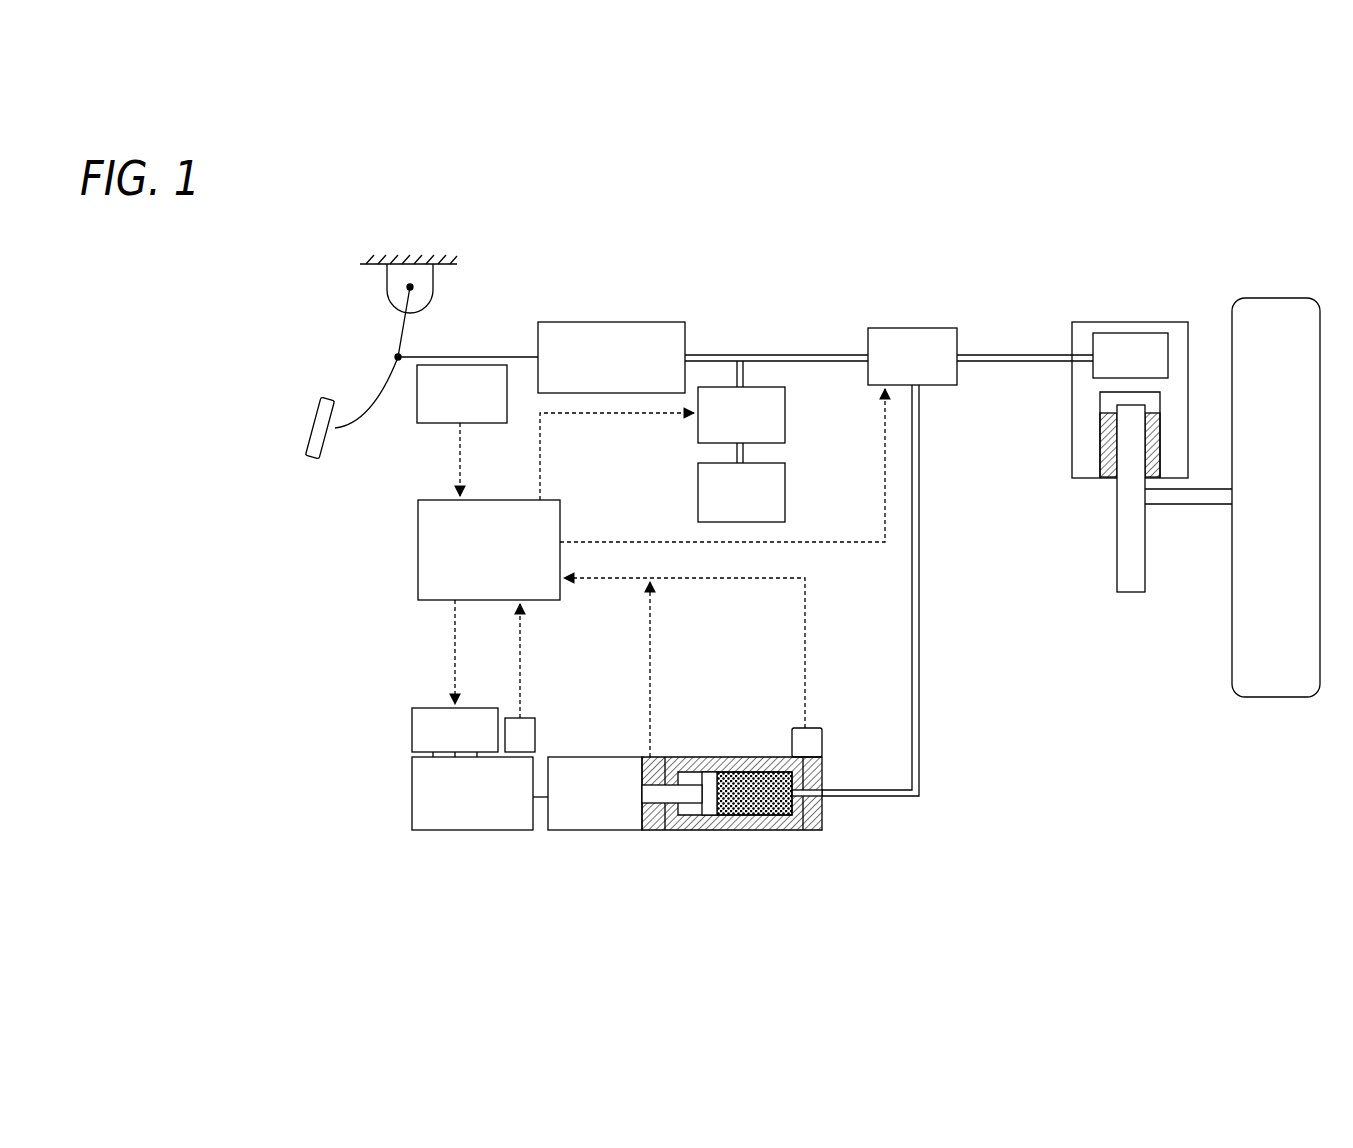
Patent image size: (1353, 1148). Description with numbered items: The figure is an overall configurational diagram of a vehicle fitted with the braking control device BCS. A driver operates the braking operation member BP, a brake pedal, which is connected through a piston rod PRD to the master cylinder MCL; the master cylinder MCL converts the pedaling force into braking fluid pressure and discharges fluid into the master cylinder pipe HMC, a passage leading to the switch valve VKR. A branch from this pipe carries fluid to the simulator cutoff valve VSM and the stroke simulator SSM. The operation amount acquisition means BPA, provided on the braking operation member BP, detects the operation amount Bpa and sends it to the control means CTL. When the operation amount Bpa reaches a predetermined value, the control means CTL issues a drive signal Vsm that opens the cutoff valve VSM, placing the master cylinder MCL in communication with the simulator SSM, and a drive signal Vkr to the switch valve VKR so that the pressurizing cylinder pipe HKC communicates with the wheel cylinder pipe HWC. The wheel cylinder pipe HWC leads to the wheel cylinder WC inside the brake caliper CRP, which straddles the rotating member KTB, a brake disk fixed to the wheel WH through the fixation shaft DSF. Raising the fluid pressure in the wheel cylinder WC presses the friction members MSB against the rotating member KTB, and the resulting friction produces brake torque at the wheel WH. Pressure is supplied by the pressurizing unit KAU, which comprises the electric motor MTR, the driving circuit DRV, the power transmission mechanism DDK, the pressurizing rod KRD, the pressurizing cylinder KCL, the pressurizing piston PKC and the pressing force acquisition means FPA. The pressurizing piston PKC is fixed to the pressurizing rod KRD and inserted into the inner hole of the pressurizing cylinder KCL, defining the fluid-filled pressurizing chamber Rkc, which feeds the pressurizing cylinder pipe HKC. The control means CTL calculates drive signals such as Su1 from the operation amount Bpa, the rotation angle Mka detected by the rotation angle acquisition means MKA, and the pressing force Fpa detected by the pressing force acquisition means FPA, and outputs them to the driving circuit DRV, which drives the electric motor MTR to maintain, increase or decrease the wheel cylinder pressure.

The braking operation member BP is at (314, 420).
The piston rod PRD is at (486, 355).
The master cylinder MCL is at (611, 357).
The operation amount acquisition means BPA is at (462, 394).
The operation amount Bpa is at (422, 459).
The master cylinder pipe HMC is at (780, 355).
The simulator cutoff valve VSM is at (741, 415).
The stroke simulator SSM is at (741, 482).
The drive signal Vsm is at (617, 456).
The switch valve VKR is at (912, 356).
The drive signal Vkr is at (722, 465).
The wheel cylinder pipe HWC is at (1010, 355).
The brake caliper CRP is at (1102, 322).
The wheel cylinder WC is at (1130, 355).
The friction members MSB is at (1102, 447).
The rotating member KTB is at (1131, 594).
The fixation shaft DSF is at (1188, 507).
The wheel WH is at (1276, 497).
The pressurizing cylinder pipe HKC is at (921, 584).
The control means CTL is at (489, 550).
The drive signal Su1 is at (320, 652).
The rotation angle Mka is at (557, 661).
The driving circuit DRV is at (455, 732).
The rotation angle acquisition means MKA is at (531, 718).
The electric motor MTR is at (480, 793).
The power transmission mechanism DDK is at (595, 793).
The pressurizing cylinder KCL is at (806, 831).
The pressurizing chamber Rkc is at (765, 817).
The pressurizing piston PKC is at (710, 832).
The pressurizing rod KRD is at (653, 832).
The pressing force acquisition means FPA is at (821, 729).
The pressing force Fpa is at (684, 667).
The pressurizing unit KAU is at (566, 877).
The braking control device BCS is at (975, 708).